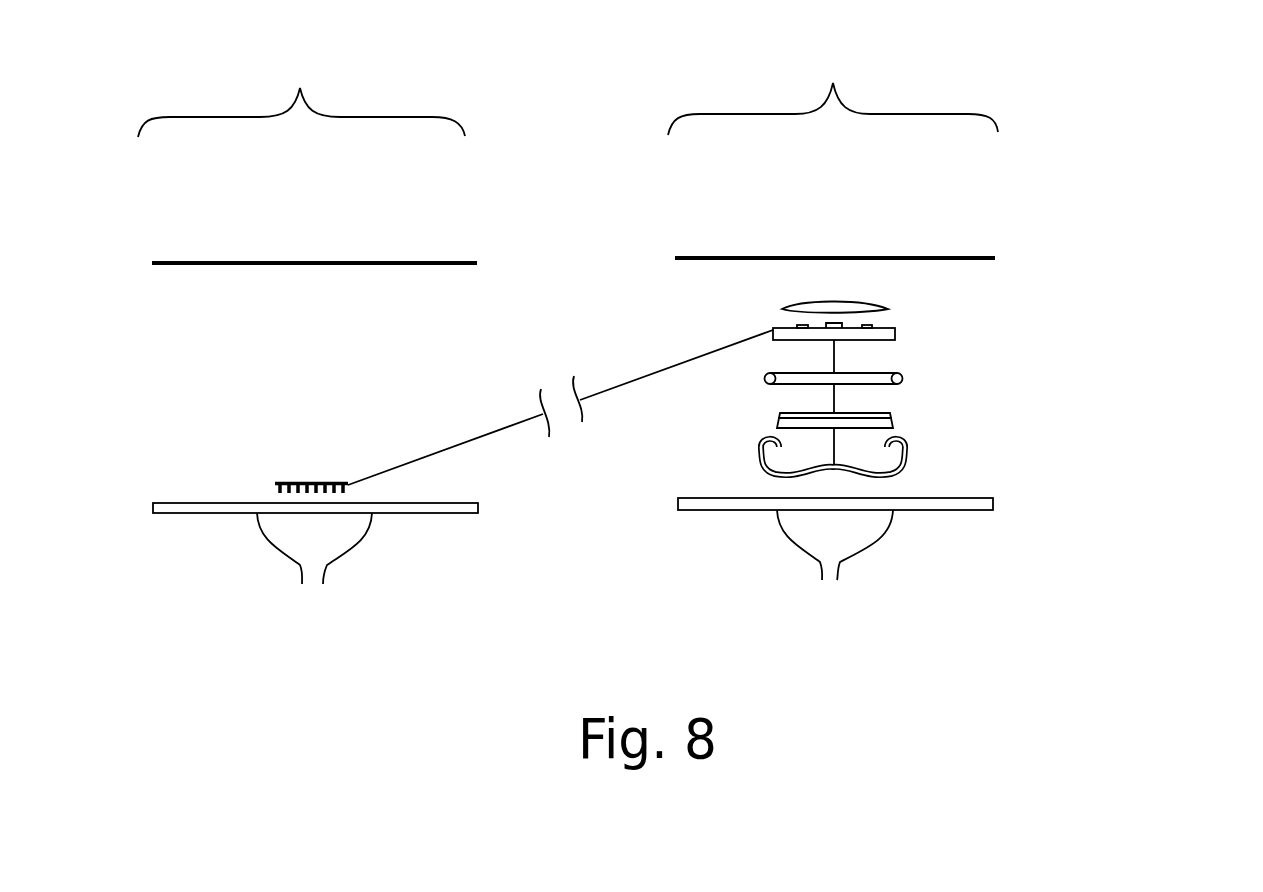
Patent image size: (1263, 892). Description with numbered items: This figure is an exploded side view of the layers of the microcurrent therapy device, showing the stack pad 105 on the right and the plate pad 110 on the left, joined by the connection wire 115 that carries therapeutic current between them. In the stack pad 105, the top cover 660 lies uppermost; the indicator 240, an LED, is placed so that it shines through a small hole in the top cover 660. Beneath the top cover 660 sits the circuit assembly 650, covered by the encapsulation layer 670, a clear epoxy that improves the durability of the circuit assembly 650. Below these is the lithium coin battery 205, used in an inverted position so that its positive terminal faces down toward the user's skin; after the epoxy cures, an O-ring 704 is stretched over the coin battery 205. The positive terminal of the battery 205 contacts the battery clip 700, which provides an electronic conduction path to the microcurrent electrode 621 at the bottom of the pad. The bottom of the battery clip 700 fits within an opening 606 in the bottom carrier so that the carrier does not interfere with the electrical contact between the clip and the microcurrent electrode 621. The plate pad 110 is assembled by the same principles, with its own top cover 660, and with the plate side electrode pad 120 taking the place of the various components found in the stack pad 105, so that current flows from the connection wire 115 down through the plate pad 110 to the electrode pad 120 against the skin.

The plate pad 110 is at (301, 94).
The stack pad 105 is at (833, 91).
The top cover 660 is at (395, 263).
The encapsulation layer 670 is at (885, 306).
The circuit assembly 650 is at (893, 328).
The indicator 240 is at (835, 323).
The O-ring 704 is at (897, 372).
The lithium coin battery 205 is at (890, 412).
The battery clip 700 is at (903, 446).
The connection wire 115 is at (692, 357).
The plate side electrode pad 120 is at (295, 482).
The microcurrent electrode 621 is at (673, 485).
The opening 606 is at (575, 564).